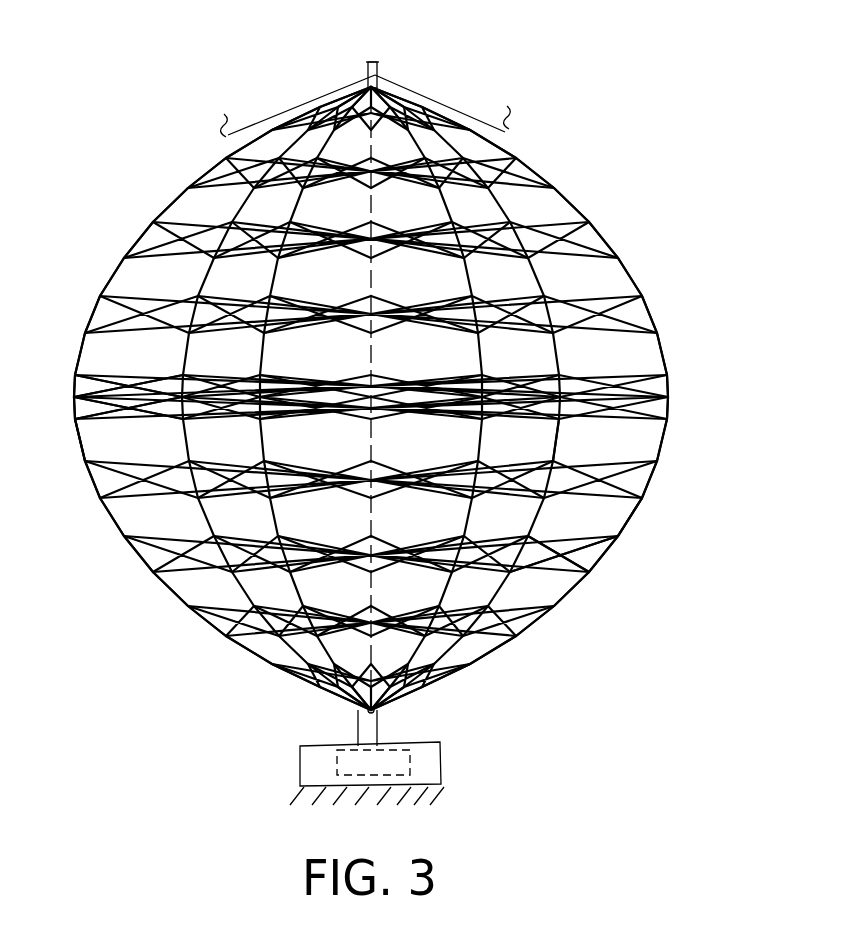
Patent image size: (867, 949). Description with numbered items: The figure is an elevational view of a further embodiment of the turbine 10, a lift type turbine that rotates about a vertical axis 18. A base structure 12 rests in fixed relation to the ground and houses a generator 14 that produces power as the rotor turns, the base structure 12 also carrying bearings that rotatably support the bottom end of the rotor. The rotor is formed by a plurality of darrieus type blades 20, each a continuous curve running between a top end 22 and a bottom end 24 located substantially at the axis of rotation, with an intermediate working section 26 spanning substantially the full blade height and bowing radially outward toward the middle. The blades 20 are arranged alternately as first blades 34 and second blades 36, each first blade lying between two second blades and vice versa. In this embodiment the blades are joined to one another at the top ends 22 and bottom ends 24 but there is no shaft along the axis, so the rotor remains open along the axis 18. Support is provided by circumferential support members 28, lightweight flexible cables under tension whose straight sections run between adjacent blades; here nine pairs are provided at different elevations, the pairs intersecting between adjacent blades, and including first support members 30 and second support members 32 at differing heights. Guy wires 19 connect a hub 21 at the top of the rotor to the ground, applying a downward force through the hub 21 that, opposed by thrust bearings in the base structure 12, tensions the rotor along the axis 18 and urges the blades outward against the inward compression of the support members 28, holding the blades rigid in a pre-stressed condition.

The turbine 10 is at (390, 406).
The base structure 12 is at (441, 768).
The generator 14 is at (337, 758).
The vertical axis 18 is at (376, 205).
The guy wires 19 is at (283, 100).
The blades 20 is at (134, 246).
The hub 21 is at (373, 62).
The top end 22 is at (378, 84).
The bottom end 24 is at (378, 715).
The working section 26 is at (72, 440).
The support members 28 is at (133, 380).
The first support members 30 is at (545, 545).
The second support members 32 is at (572, 555).
The first blades 34 is at (556, 441).
The second blades 36 is at (630, 525).